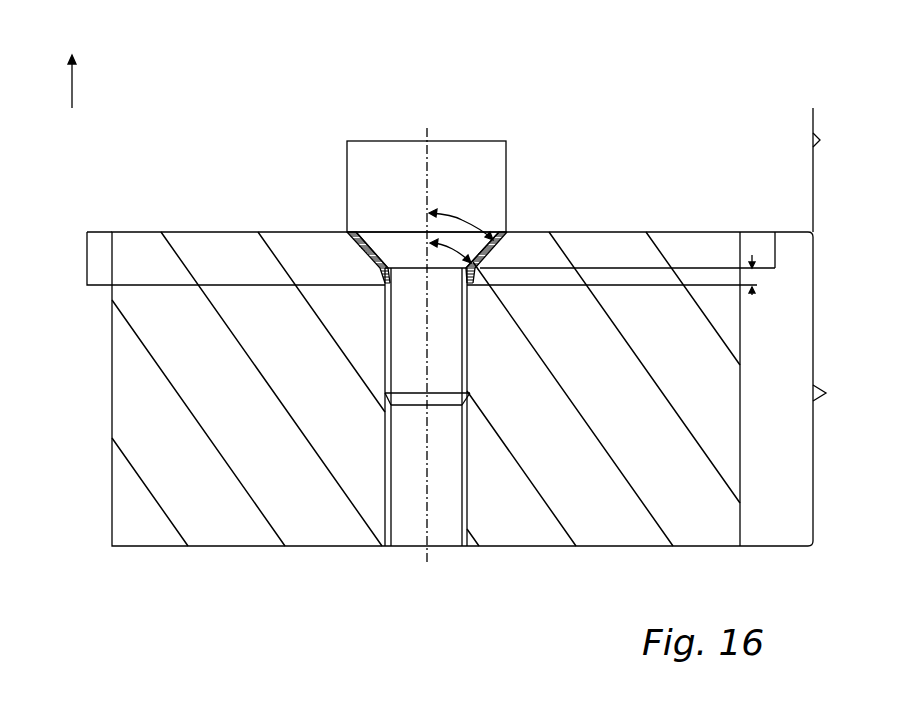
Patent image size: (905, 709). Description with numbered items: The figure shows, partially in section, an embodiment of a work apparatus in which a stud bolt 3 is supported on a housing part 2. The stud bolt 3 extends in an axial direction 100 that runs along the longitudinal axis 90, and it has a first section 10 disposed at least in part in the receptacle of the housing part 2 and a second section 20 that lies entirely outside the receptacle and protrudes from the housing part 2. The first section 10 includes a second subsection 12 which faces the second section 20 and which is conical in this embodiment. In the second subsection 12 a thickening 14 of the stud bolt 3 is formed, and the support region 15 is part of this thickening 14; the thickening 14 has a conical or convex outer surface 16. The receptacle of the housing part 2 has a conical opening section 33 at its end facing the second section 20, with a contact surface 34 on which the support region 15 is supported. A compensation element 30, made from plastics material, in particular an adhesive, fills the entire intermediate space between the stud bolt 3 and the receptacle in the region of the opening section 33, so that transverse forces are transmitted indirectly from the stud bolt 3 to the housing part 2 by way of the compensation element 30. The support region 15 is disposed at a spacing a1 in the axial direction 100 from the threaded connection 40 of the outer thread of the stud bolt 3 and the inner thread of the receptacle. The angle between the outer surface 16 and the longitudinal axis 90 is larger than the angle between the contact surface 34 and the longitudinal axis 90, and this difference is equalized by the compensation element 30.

The housing part 2 is at (120, 498).
The stud bolt 3 is at (505, 142).
The first section 10 is at (798, 389).
The second subsection 12 is at (778, 251).
The thickening 14 is at (348, 230).
The support region 15 is at (378, 258).
The outer surface 16 is at (496, 254).
The second section 20 is at (832, 170).
The compensation element 30 is at (385, 268).
The opening section 33 is at (87, 262).
The contact surface 34 is at (460, 252).
The threaded connection 40 is at (387, 394).
The longitudinal axis 90 is at (423, 132).
The axial direction 100 is at (73, 97).
The spacing a1 is at (752, 292).